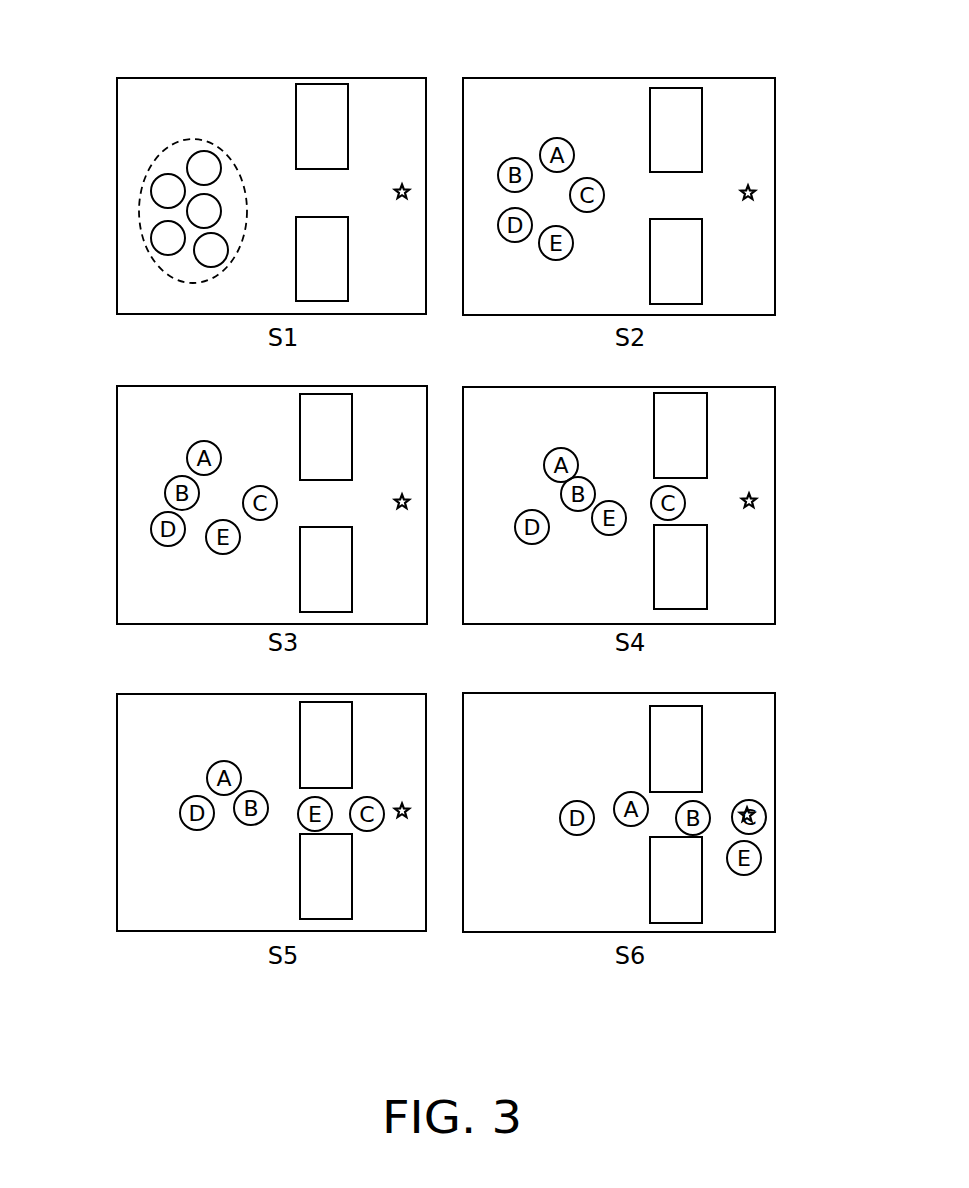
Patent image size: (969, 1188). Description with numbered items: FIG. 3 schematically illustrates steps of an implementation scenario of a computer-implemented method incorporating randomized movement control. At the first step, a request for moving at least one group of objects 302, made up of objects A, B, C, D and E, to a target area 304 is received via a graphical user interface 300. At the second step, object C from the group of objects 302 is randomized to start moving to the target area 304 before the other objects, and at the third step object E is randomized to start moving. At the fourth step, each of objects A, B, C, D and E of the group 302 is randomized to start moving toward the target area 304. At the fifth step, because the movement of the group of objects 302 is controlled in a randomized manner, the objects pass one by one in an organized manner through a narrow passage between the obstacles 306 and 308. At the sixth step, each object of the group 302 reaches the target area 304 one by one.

The graphical user interface 300 is at (142, 97).
The group of objects 302 is at (140, 193).
The target area 304 is at (753, 191).
The obstacle 306 is at (318, 103).
The obstacle 308 is at (688, 257).